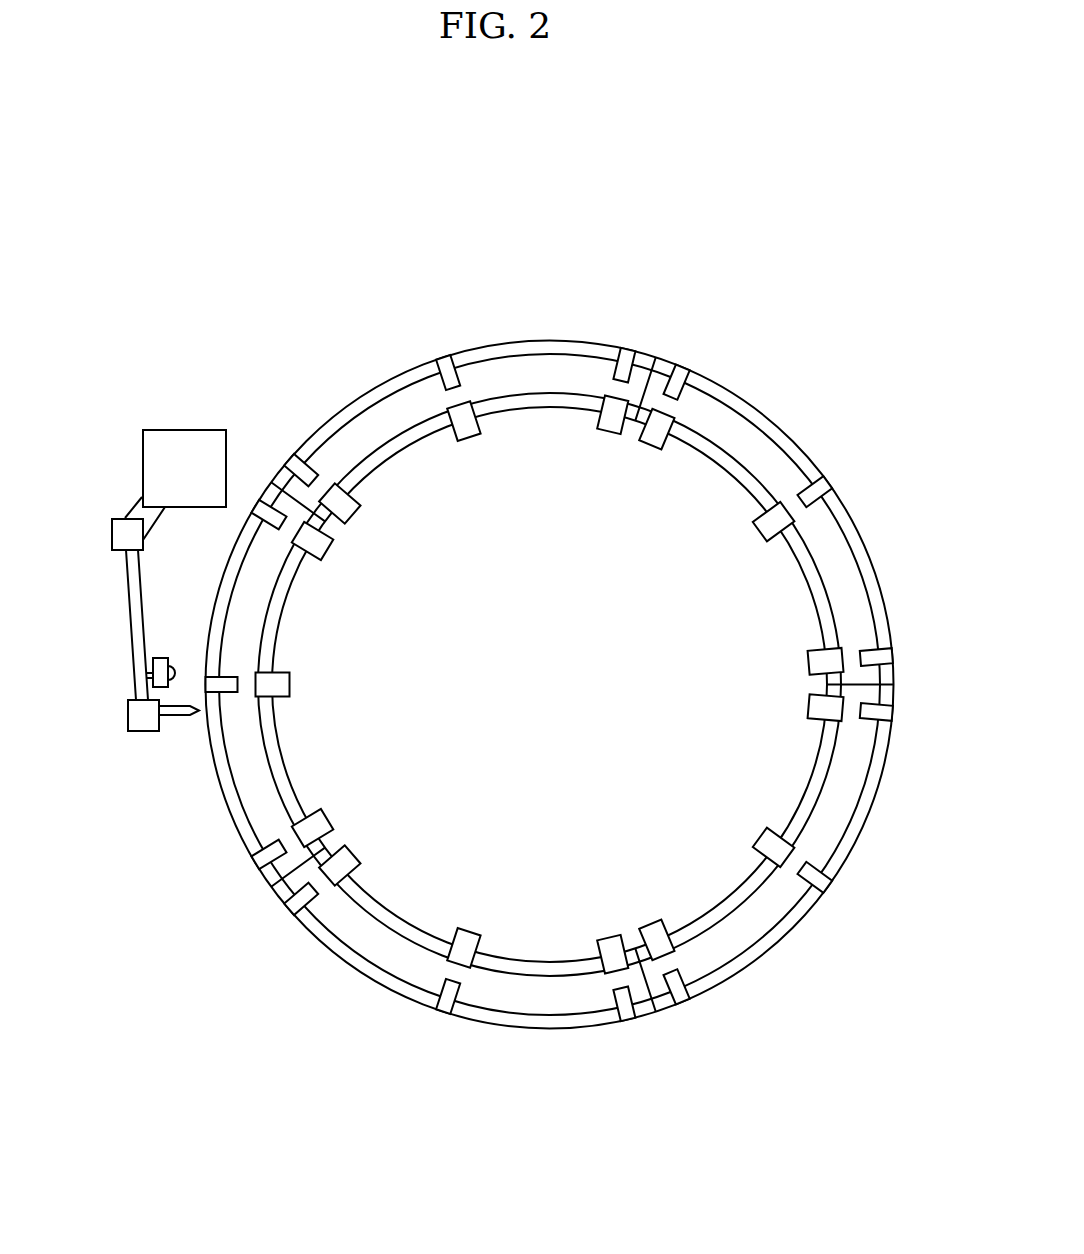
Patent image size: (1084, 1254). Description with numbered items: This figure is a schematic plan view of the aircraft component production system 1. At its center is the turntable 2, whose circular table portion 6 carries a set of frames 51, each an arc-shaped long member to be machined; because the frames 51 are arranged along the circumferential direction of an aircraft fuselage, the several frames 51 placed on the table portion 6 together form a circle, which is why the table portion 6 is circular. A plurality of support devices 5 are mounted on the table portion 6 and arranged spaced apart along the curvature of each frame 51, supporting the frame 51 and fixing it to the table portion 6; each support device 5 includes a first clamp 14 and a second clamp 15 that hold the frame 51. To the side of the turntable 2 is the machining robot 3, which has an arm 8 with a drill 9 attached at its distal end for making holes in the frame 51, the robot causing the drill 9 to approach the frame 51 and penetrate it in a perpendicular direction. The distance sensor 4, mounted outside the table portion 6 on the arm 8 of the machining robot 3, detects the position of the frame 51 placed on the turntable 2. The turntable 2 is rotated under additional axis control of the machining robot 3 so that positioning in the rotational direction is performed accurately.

The aircraft component production system 1 is at (757, 242).
The turntable 2 is at (780, 405).
The machining robot 3 is at (183, 429).
The distance sensor 4 is at (160, 657).
The support device 5 is at (340, 553).
The table portion 6 is at (722, 382).
The arm 8 is at (127, 593).
The drill 9 is at (177, 718).
The first clamp 14 is at (315, 552).
The second clamp 15 is at (262, 513).
The frame 51 is at (552, 370).